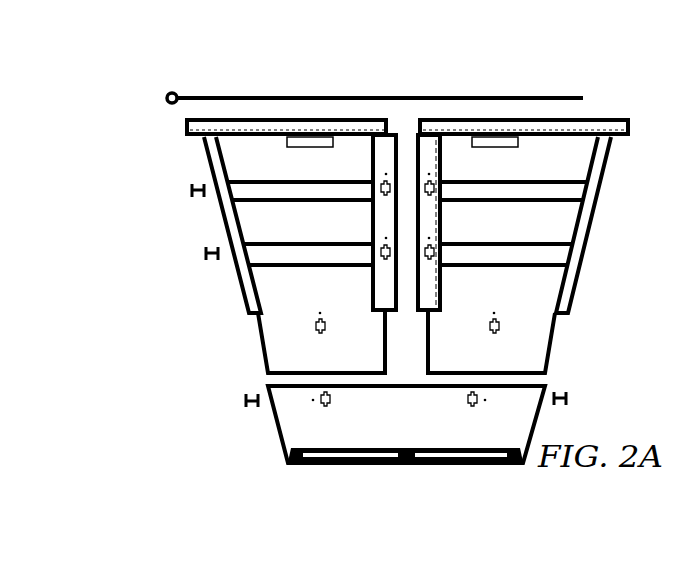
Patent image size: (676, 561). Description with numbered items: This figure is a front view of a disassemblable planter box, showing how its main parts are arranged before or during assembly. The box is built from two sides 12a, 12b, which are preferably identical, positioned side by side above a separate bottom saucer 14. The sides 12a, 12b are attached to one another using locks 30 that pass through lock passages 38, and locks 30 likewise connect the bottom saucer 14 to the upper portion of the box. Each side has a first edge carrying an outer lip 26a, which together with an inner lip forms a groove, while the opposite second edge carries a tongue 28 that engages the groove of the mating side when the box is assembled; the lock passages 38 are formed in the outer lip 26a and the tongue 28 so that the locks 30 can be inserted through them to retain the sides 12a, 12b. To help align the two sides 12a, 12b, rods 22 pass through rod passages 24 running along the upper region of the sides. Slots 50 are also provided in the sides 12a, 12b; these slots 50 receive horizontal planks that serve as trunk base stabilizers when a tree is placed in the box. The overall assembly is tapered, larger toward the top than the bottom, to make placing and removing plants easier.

The side 12a is at (480, 345).
The side 12b is at (312, 356).
The bottom saucer 14 is at (477, 439).
The rod 22 is at (222, 95).
The rod passage 24 is at (237, 130).
The outer lip 26a is at (388, 218).
The tongue 28 is at (437, 213).
The lock 30 is at (190, 190).
The lock passage 38 is at (378, 190).
The slot 50 is at (313, 140).